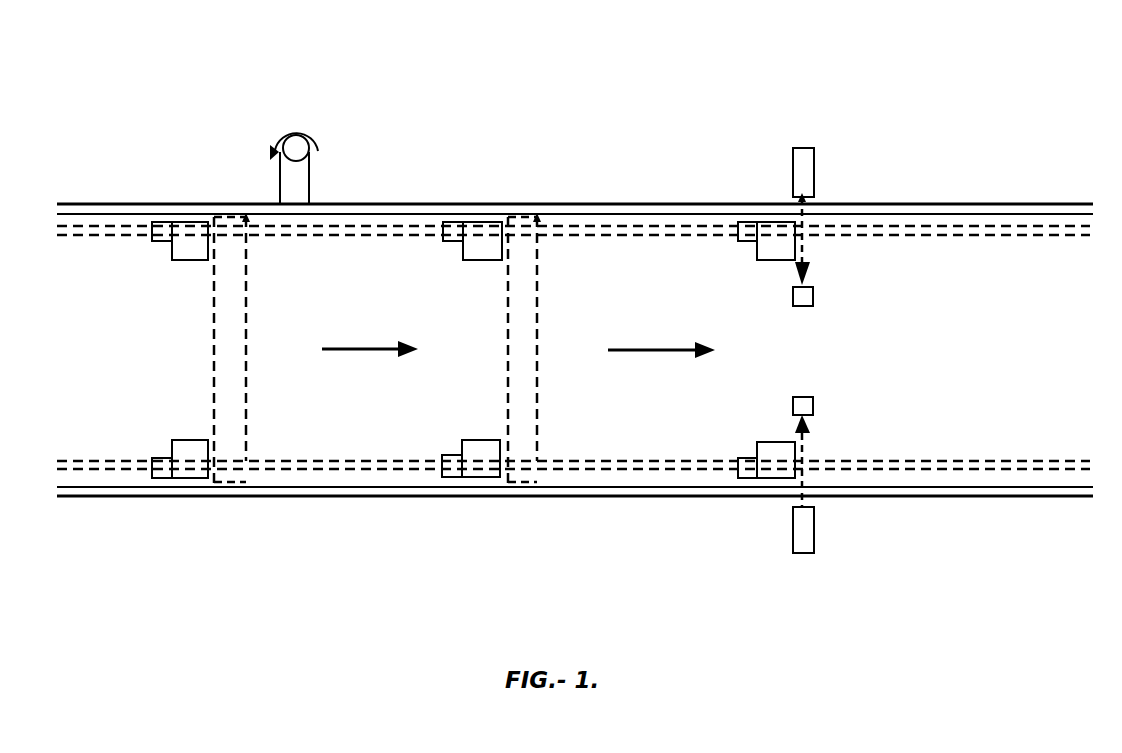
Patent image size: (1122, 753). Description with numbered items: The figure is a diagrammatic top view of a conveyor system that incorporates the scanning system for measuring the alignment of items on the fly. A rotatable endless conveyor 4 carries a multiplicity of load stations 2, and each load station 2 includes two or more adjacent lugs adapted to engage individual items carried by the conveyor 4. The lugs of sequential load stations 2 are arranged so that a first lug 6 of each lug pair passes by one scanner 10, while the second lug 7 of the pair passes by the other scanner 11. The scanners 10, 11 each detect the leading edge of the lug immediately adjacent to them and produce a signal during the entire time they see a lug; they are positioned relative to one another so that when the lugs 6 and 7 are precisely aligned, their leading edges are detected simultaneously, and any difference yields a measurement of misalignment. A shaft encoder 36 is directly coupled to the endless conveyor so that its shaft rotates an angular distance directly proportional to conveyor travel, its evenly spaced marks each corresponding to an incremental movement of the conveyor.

The load station 2 is at (452, 184).
The rotatable endless conveyor 4 is at (916, 200).
The lug 6 is at (483, 237).
The lug 7 is at (472, 465).
The scanner 10 is at (805, 158).
The scanner 11 is at (802, 405).
The shaft encoder 36 is at (295, 147).